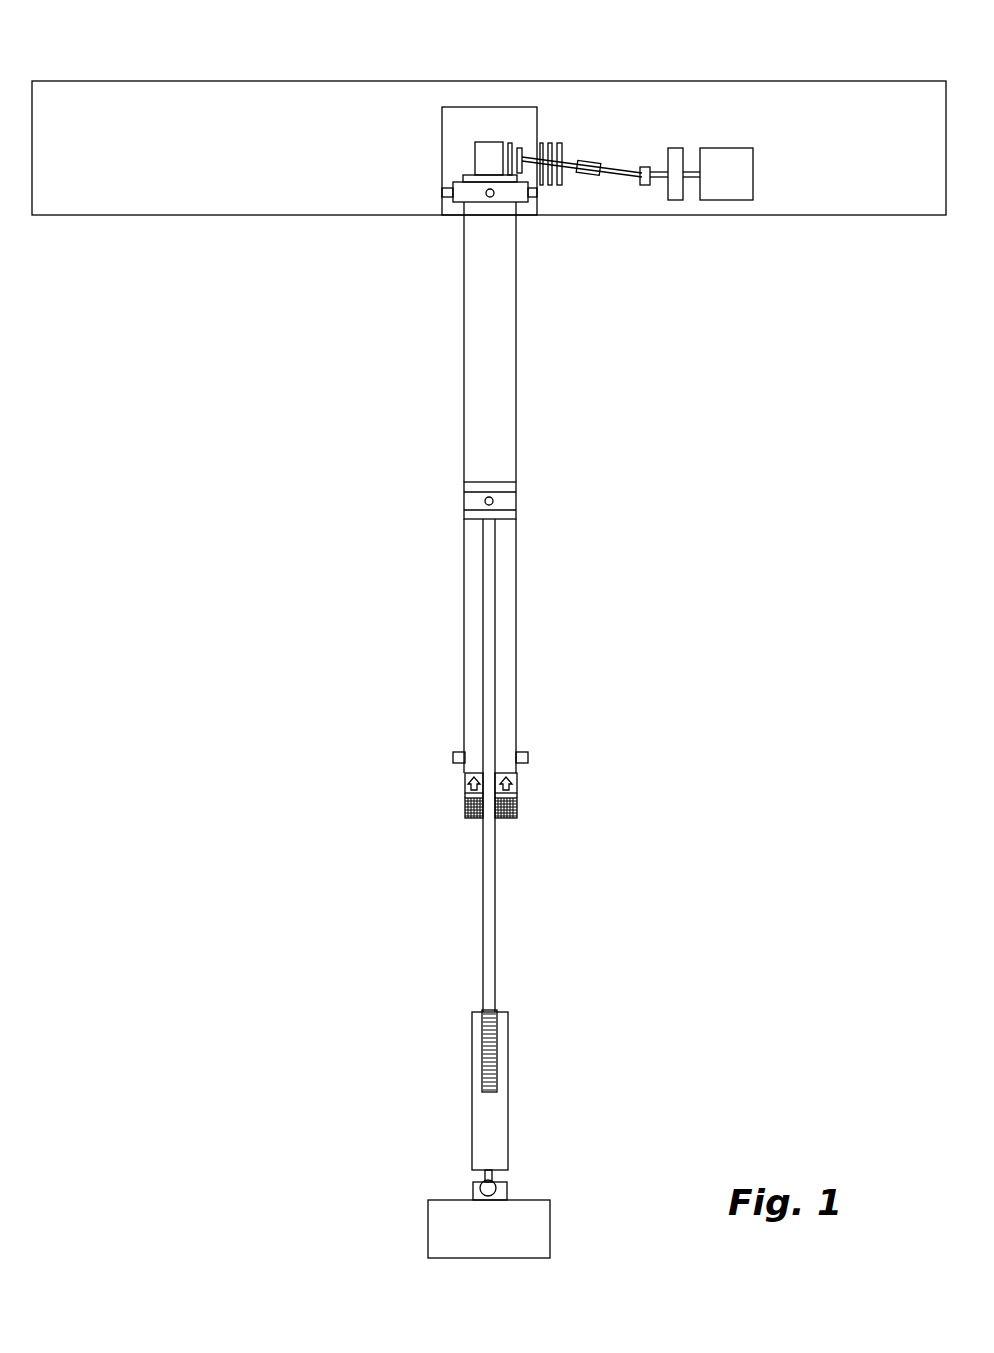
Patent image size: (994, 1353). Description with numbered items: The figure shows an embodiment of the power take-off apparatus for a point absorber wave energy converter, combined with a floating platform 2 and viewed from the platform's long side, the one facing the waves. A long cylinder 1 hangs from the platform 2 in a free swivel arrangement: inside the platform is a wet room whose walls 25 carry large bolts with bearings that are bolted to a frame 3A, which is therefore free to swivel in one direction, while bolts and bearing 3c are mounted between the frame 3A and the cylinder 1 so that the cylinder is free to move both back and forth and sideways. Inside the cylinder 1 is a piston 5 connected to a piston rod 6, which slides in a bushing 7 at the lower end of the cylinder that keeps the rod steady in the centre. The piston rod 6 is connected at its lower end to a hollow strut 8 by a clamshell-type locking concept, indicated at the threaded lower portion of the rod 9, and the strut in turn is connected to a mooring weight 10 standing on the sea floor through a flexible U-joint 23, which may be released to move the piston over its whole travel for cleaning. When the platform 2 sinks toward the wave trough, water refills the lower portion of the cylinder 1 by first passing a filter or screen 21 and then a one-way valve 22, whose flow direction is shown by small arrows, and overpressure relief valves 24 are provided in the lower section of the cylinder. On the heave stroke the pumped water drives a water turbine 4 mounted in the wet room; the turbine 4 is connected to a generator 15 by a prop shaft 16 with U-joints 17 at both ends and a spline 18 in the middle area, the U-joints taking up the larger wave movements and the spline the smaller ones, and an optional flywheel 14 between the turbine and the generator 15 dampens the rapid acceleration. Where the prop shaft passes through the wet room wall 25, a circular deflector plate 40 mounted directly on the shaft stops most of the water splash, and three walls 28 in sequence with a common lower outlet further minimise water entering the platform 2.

The cylinder 1 is at (468, 391).
The floating platform 2 is at (187, 137).
The bolts and bearing 3c is at (441, 192).
The frame 3A is at (478, 205).
The water turbine 4 is at (488, 150).
The piston 5 is at (466, 507).
The piston rod 6 is at (489, 668).
The bushing 7 is at (517, 798).
The strut 8 is at (473, 1128).
The threaded rod 9 is at (487, 1053).
The mooring weight 10 is at (442, 1233).
The flywheel 14 is at (675, 148).
The generator 15 is at (730, 182).
The prop shaft 16 is at (568, 175).
The U-joints 17 is at (519, 148).
The spline 18 is at (593, 161).
The filter or screen 21 is at (465, 803).
The one-way valve 22 is at (465, 787).
The flexible U-joint 23 is at (473, 1187).
The overpressure relief valves 24 is at (452, 757).
The walls of the wet room 25 is at (441, 157).
The three walls 28 is at (543, 186).
The circular deflector plate/disc 40 is at (510, 143).